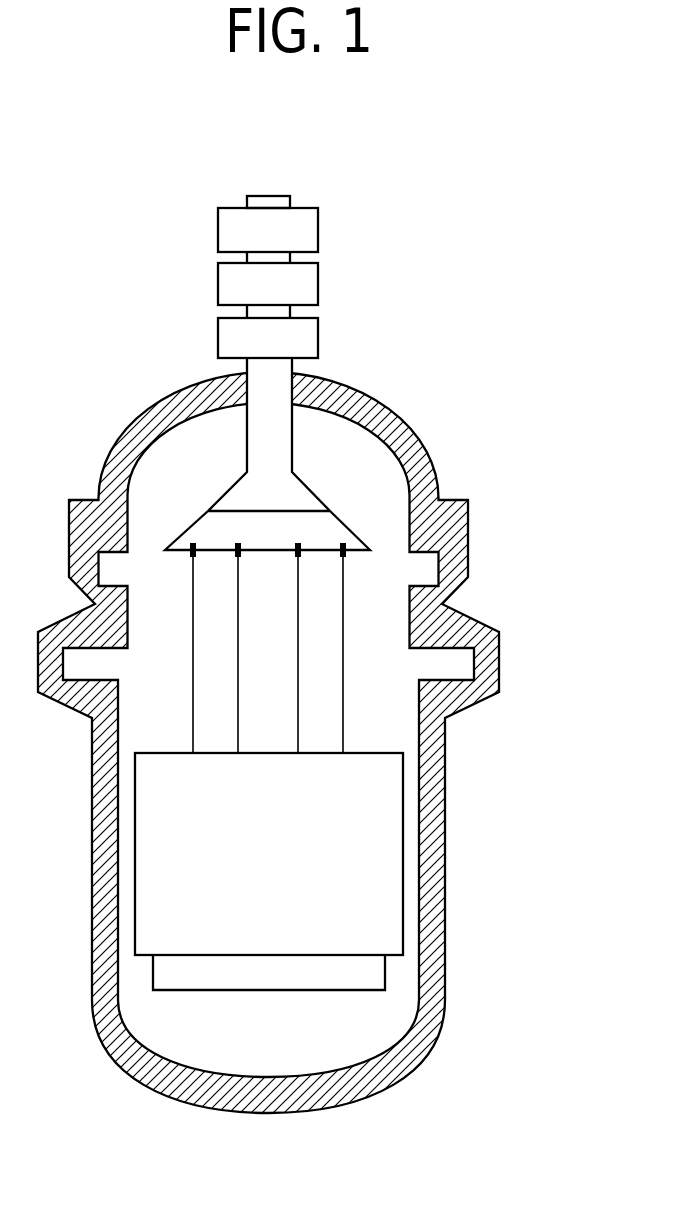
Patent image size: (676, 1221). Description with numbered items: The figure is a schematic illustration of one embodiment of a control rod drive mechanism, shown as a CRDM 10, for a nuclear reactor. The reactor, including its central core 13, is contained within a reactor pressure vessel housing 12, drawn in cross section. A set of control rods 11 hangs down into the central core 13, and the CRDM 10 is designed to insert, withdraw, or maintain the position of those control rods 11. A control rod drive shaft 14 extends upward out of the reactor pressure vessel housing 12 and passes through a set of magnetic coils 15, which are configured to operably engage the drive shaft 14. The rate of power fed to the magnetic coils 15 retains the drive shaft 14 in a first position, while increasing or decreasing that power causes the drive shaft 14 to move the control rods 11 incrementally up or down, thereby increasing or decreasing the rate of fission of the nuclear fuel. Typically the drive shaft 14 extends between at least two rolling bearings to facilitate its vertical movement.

The CRDM 10 is at (273, 182).
The control rods 11 is at (343, 622).
The reactor pressure vessel housing 12 is at (367, 392).
The central core 13 is at (403, 835).
The control rod drive shaft 14 is at (262, 427).
The magnetic coils 15 is at (318, 330).